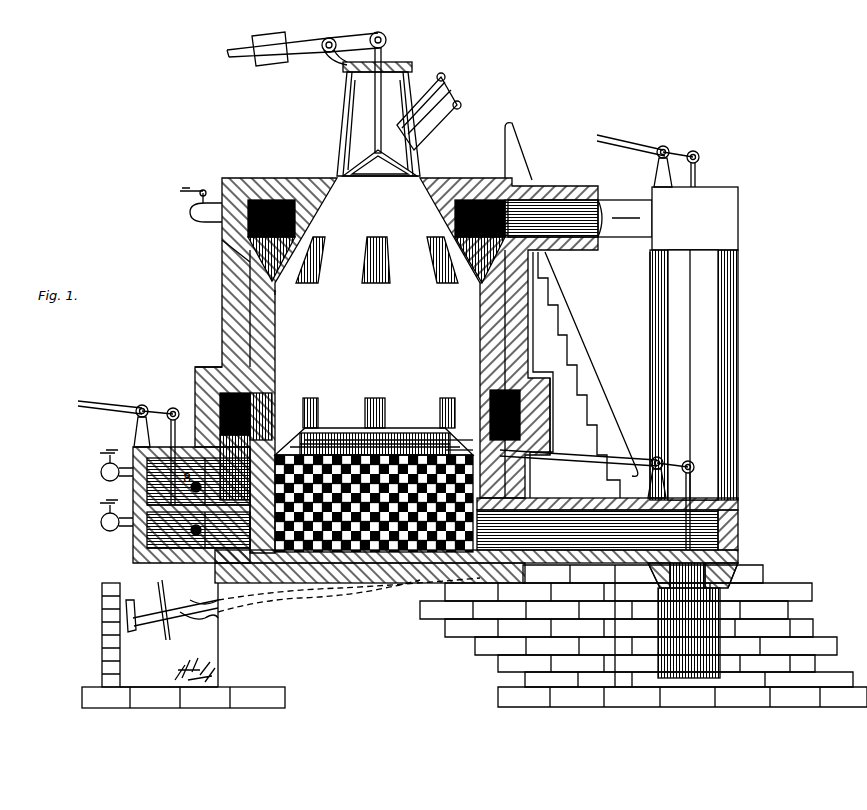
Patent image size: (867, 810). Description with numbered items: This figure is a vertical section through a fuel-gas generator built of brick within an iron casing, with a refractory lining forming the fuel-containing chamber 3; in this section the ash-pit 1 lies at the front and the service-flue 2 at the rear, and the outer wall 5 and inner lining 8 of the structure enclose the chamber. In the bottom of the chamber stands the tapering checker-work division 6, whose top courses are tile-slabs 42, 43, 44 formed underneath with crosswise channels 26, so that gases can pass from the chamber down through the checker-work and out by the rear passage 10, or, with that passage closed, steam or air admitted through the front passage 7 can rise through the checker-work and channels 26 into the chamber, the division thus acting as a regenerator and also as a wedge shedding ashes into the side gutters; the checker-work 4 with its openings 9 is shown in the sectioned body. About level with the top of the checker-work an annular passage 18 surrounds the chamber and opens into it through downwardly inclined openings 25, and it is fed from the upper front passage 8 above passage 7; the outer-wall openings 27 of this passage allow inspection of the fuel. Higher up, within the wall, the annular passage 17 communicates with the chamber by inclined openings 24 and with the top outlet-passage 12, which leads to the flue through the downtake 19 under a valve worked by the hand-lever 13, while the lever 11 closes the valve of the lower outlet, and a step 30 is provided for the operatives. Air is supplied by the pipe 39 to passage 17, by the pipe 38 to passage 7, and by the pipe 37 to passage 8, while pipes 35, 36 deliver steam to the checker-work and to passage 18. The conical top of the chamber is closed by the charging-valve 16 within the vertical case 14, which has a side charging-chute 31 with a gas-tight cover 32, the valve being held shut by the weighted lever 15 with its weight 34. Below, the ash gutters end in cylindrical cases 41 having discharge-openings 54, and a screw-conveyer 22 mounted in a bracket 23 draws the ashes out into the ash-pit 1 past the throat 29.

The ash-pit 1 is at (183, 645).
The service-flue 2 is at (693, 620).
The fuel-containing chamber 3 is at (325, 319).
The checkerwork 4 is at (367, 509).
The outer wall 5 is at (266, 365).
The division 6 is at (385, 432).
The passage 7 is at (185, 515).
The passage 8 is at (241, 290).
The steam valve lever 9 is at (128, 446).
The passage 10 is at (607, 524).
The lever 11 is at (599, 496).
The top outlet-passage 12 is at (578, 218).
The hand-lever 13 is at (667, 189).
The vertical case 14 is at (378, 119).
The weighted lever 15 is at (306, 81).
The charging-valve 16 is at (420, 440).
The annular passage 17 is at (268, 190).
The annular passage 18 is at (275, 385).
The downtake 19 is at (694, 375).
The screw-conveyer 22 is at (170, 619).
The bracket 23 is at (130, 608).
The openings 24 is at (376, 241).
The openings 25 is at (370, 445).
The channels 26 is at (400, 435).
The outer-wall openings 27 is at (198, 505).
The throat 29 is at (693, 568).
The step 30 is at (588, 348).
The charging-chute 31 is at (427, 113).
The gas-tight cover 32 is at (448, 80).
The weight 34 is at (270, 49).
The pipe 35 is at (91, 455).
The pipe 36 is at (91, 506).
The air-supply pipe 37 is at (191, 505).
The air-supply pipe 38 is at (234, 530).
The air-supply pipe 39 is at (190, 205).
The cylindrical case 41 is at (195, 660).
The tile 42 is at (460, 442).
The tile 43 is at (459, 430).
The tile 44 is at (325, 440).
The discharge-opening 54 is at (197, 611).